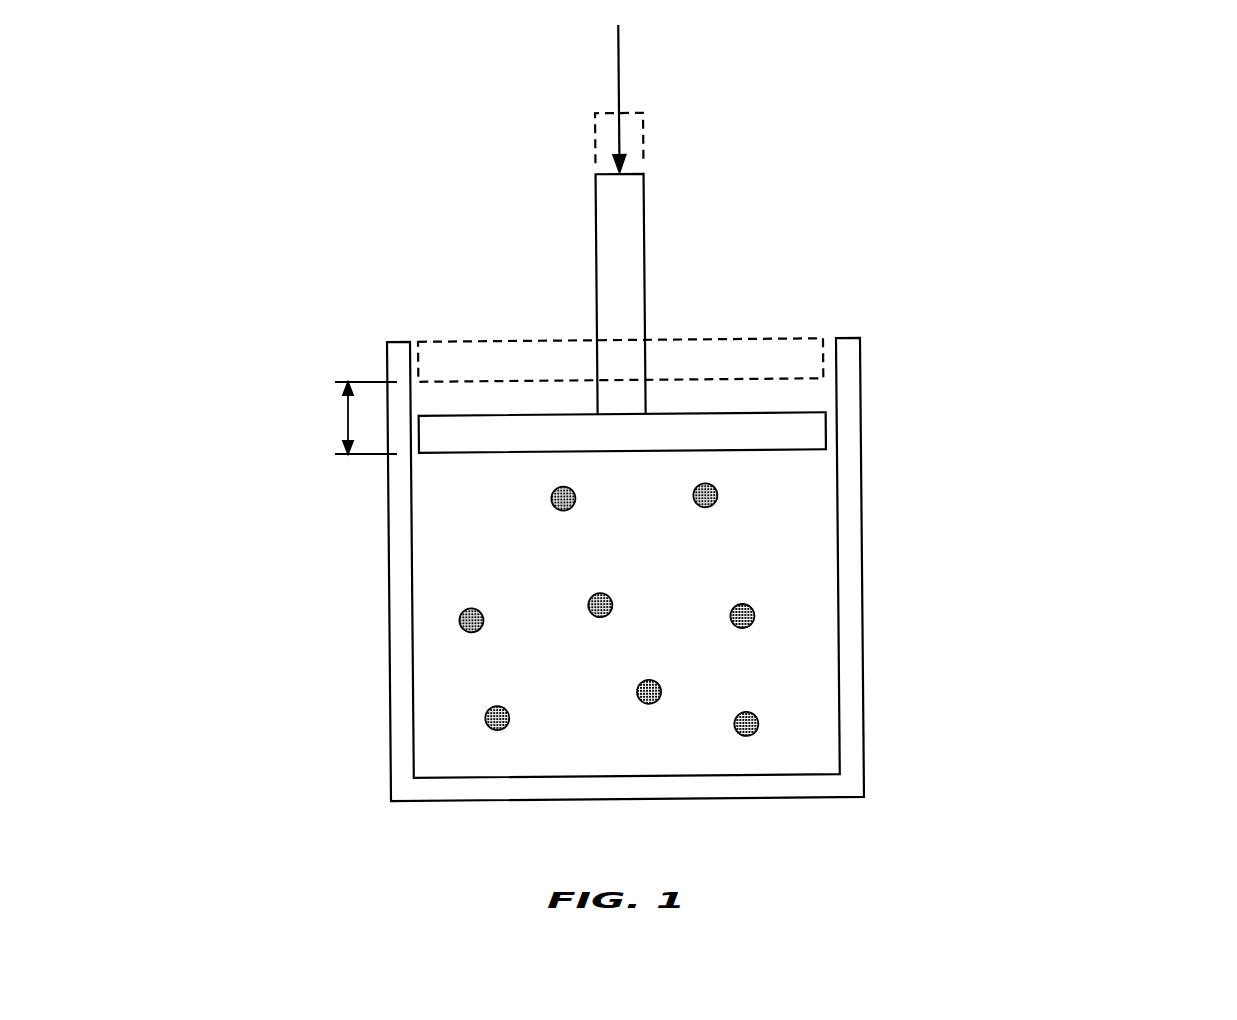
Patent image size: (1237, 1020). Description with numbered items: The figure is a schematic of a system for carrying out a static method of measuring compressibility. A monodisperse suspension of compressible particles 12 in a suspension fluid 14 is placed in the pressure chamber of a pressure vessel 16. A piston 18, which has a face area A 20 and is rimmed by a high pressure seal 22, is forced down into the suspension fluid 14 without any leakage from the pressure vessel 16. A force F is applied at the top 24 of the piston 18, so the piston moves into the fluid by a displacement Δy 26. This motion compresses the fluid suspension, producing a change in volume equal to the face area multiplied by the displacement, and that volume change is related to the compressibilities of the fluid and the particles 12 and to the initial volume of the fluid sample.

The compressible particles 12 is at (753, 608).
The suspension fluid 14 is at (802, 535).
The pressure vessel 16 is at (863, 707).
The piston 18 is at (599, 246).
The face area A 20 is at (728, 340).
The high pressure seal 22 is at (815, 432).
The top of piston 24 is at (620, 80).
The displacement Δy 26 is at (271, 423).